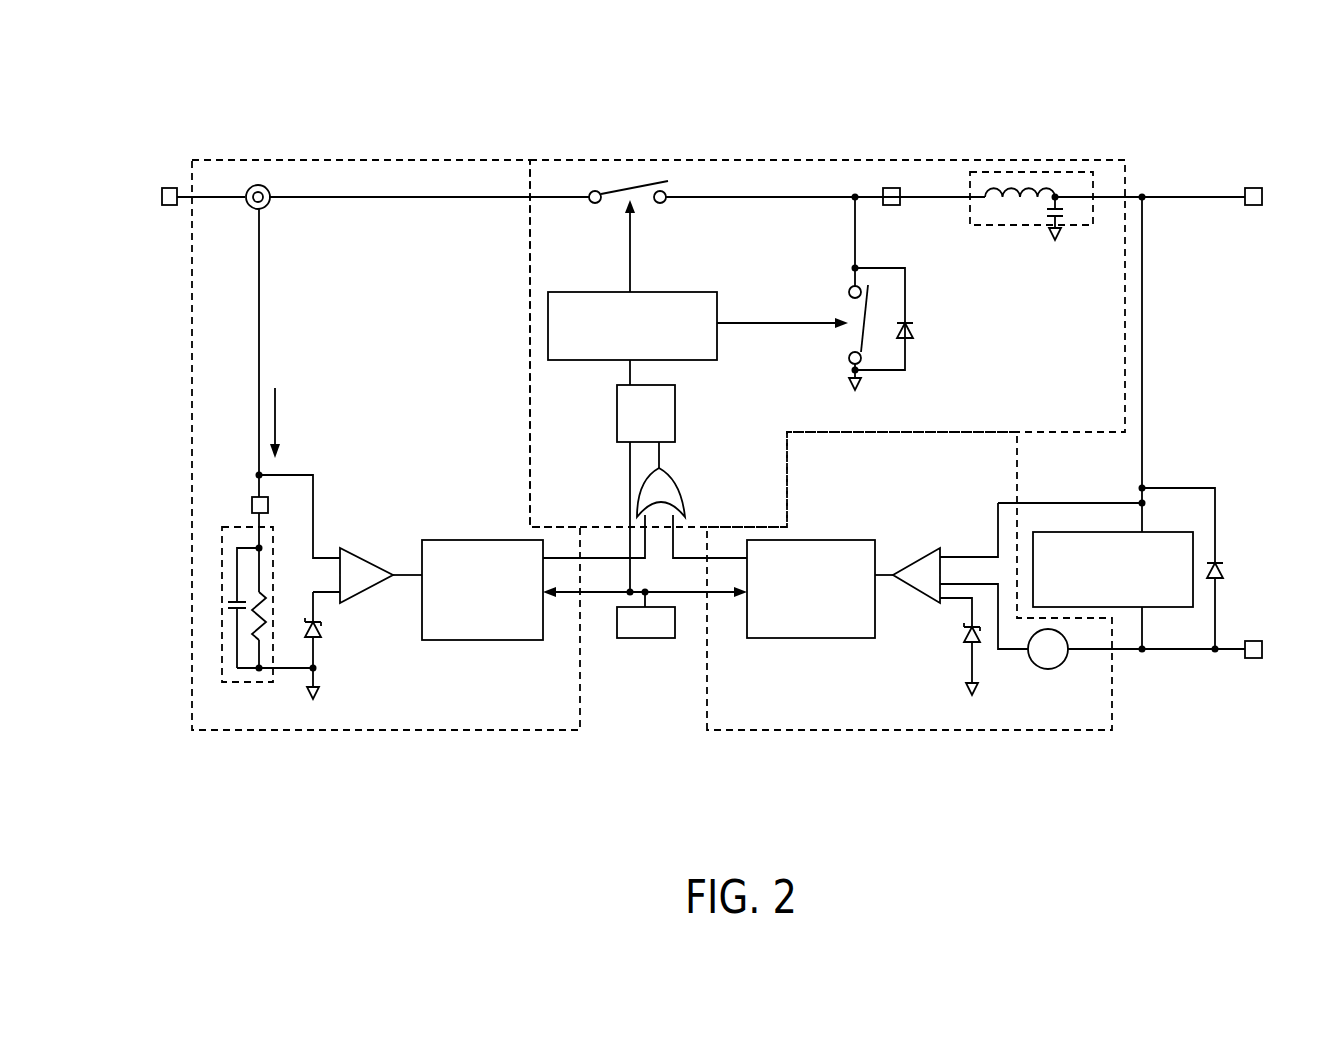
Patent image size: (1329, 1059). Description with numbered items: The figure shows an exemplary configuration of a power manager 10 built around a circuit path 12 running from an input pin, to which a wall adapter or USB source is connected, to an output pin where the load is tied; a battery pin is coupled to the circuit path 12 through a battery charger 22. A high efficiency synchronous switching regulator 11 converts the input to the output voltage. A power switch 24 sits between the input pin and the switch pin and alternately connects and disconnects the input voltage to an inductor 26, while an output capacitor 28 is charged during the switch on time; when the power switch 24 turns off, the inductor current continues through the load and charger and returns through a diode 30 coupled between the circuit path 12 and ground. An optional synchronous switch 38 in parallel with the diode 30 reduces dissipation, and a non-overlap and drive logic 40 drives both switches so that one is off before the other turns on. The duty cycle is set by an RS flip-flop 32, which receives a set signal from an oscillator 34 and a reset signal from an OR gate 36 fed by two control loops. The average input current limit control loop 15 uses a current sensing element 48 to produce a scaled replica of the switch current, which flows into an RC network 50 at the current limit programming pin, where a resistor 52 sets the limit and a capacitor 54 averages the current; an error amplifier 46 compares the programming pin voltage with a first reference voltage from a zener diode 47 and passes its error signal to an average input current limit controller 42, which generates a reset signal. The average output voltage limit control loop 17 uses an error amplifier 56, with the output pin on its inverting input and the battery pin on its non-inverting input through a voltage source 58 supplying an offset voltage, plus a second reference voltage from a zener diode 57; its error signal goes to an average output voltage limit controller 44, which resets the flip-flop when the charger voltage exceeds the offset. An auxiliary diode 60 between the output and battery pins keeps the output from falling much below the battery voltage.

The power manager 10 is at (936, 112).
The synchronous switching regulator 11 is at (748, 160).
The circuit path 12 is at (452, 204).
The average input current limit control loop 15 is at (383, 160).
The average output voltage limit control loop 17 is at (905, 743).
The battery charger 22 is at (1080, 532).
The power switch 24 is at (626, 186).
The inductor 26 is at (1013, 200).
The output capacitor 28 is at (1073, 214).
The diode 30 is at (913, 333).
The RS flip-flop 32 is at (675, 405).
The oscillator 34 is at (645, 638).
The OR gate 36 is at (685, 490).
The synchronous switch 38 is at (848, 318).
The non-overlap and drive logic 40 is at (695, 292).
The average input current limit controller 42 is at (500, 540).
The average output voltage limit controller 44 is at (815, 540).
The error amplifier 46 is at (362, 557).
The zener diode 47 is at (317, 638).
The current sensing element 48 is at (263, 207).
The RC network 50 is at (222, 533).
The resistor 52 is at (257, 620).
The capacitor 54 is at (228, 604).
The error amplifier 56 is at (926, 553).
The zener diode 57 is at (968, 640).
The voltage source 58 is at (1036, 668).
The auxiliary diode 60 is at (1223, 571).